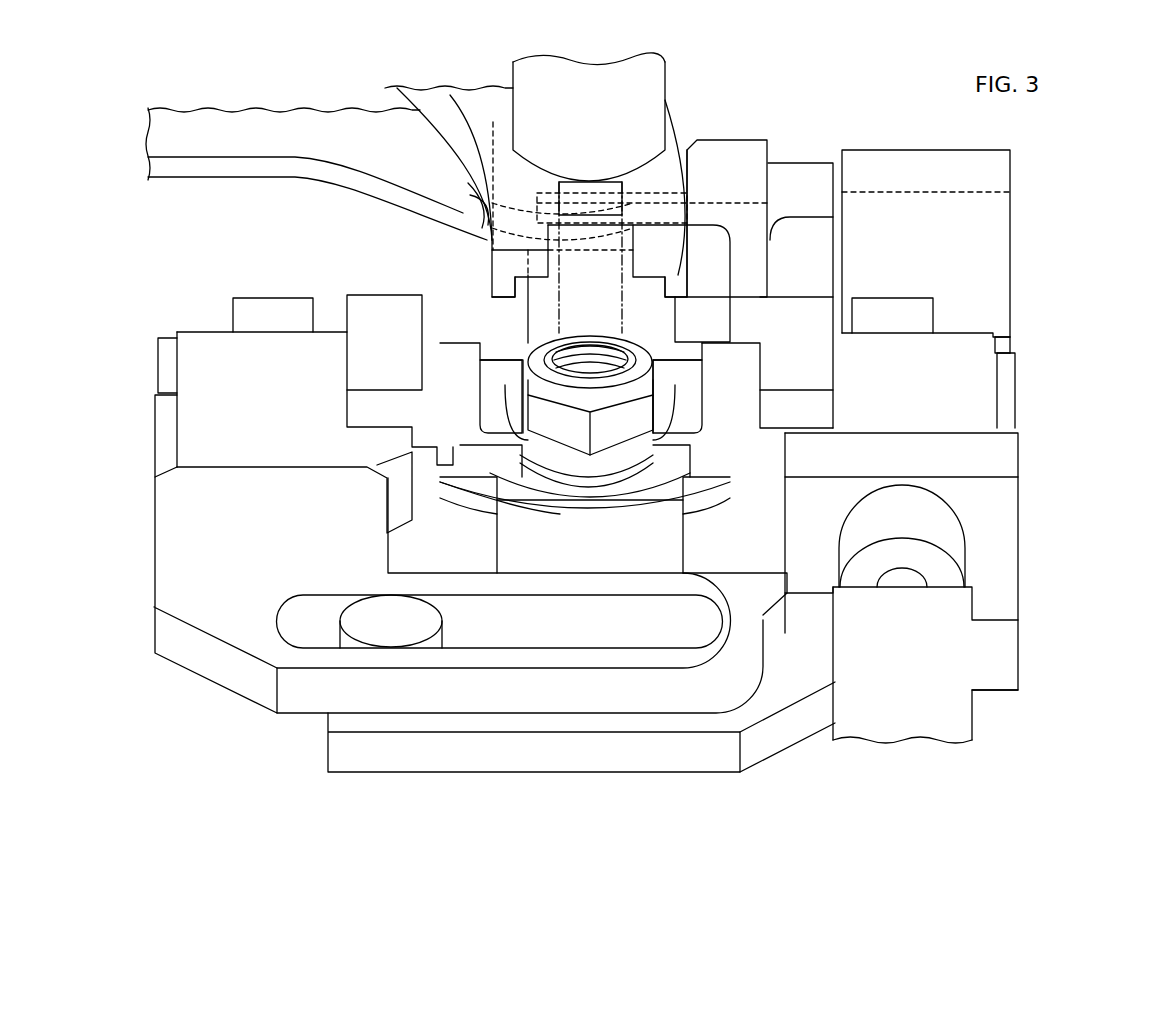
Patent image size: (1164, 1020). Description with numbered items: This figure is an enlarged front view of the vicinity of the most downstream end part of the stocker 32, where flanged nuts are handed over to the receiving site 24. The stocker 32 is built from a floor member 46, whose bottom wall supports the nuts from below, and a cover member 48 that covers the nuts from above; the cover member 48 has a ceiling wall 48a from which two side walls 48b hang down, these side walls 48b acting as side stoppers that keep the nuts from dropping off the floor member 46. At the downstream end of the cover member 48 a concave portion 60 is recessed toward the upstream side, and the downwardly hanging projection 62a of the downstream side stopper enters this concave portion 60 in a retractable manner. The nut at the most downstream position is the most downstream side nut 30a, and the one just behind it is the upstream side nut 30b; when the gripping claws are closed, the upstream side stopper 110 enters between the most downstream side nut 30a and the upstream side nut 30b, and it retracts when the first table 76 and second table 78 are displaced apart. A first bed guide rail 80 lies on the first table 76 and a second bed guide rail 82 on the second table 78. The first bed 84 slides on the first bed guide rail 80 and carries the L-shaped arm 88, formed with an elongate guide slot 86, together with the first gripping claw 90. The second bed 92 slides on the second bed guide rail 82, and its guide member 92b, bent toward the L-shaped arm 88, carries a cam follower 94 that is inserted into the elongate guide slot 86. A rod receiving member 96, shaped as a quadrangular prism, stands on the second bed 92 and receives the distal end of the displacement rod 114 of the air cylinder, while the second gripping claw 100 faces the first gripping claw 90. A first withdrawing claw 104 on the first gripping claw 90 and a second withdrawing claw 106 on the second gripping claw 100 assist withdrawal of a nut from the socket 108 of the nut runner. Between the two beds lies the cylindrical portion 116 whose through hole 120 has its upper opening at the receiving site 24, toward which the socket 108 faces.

The receiving site 24 is at (643, 335).
The most downstream side nut 30a is at (603, 460).
The upstream side nut 30b is at (470, 215).
The stocker 32 is at (548, 304).
The floor member 46 is at (308, 140).
The cover member 48 is at (431, 90).
The ceiling wall 48a is at (475, 118).
The side walls 48b is at (500, 283).
The concave portion 60 is at (555, 233).
The downwardly hanging projection 62a is at (628, 283).
The first table 76 is at (160, 374).
The second table 78 is at (1005, 347).
The first bed guide rail 80 is at (279, 298).
The second bed guide rail 82 is at (900, 305).
The first bed 84 is at (160, 437).
The elongate guide slot 86 is at (300, 613).
The L-shaped arm 88 is at (190, 562).
The first gripping claw 90 is at (203, 342).
The second bed 92 is at (1012, 390).
The guide member 92b is at (340, 750).
The cam follower 94 is at (375, 610).
The rod receiving member 96 is at (1002, 496).
The second gripping claw 100 is at (957, 348).
The first withdrawing claw 104 is at (505, 427).
The second withdrawing claw 106 is at (680, 423).
The socket 108 is at (653, 80).
The upstream side stopper 110 is at (728, 158).
The displacement rod 114 is at (950, 538).
The cylindrical portion 116 is at (483, 555).
The through hole 120 is at (472, 490).